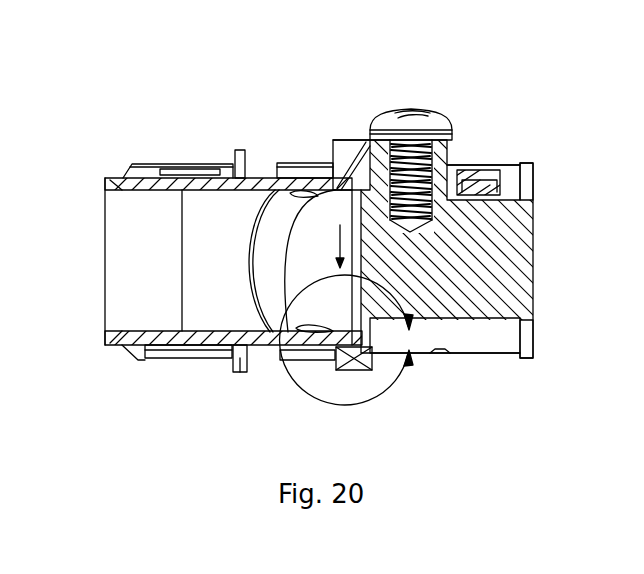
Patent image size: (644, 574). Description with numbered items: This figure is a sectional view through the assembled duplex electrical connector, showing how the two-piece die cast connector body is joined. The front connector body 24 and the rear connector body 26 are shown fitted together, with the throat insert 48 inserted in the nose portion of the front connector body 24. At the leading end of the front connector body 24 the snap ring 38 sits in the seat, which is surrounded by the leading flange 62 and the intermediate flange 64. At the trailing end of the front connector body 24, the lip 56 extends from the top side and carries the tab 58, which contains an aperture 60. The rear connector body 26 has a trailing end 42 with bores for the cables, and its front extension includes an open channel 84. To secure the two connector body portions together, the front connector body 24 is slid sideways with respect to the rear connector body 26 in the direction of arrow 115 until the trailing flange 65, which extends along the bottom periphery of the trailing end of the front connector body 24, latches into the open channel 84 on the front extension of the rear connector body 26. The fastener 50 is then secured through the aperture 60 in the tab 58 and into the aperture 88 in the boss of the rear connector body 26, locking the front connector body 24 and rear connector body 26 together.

The front connector body 24 is at (258, 347).
The rear connector body 26 is at (490, 358).
The snap ring 38 is at (188, 160).
The trailing end 42 is at (533, 238).
The throat insert 48 is at (103, 345).
The fastener 50 is at (405, 112).
The lip 56 is at (352, 140).
The tab 58 is at (455, 160).
The aperture 60 is at (455, 140).
The leading flange 62 is at (140, 360).
The intermediate flange 64 is at (240, 372).
The trailing flange 65 is at (336, 360).
The open channel 84 is at (350, 398).
The aperture 88 is at (425, 226).
The arrow 115 is at (338, 238).